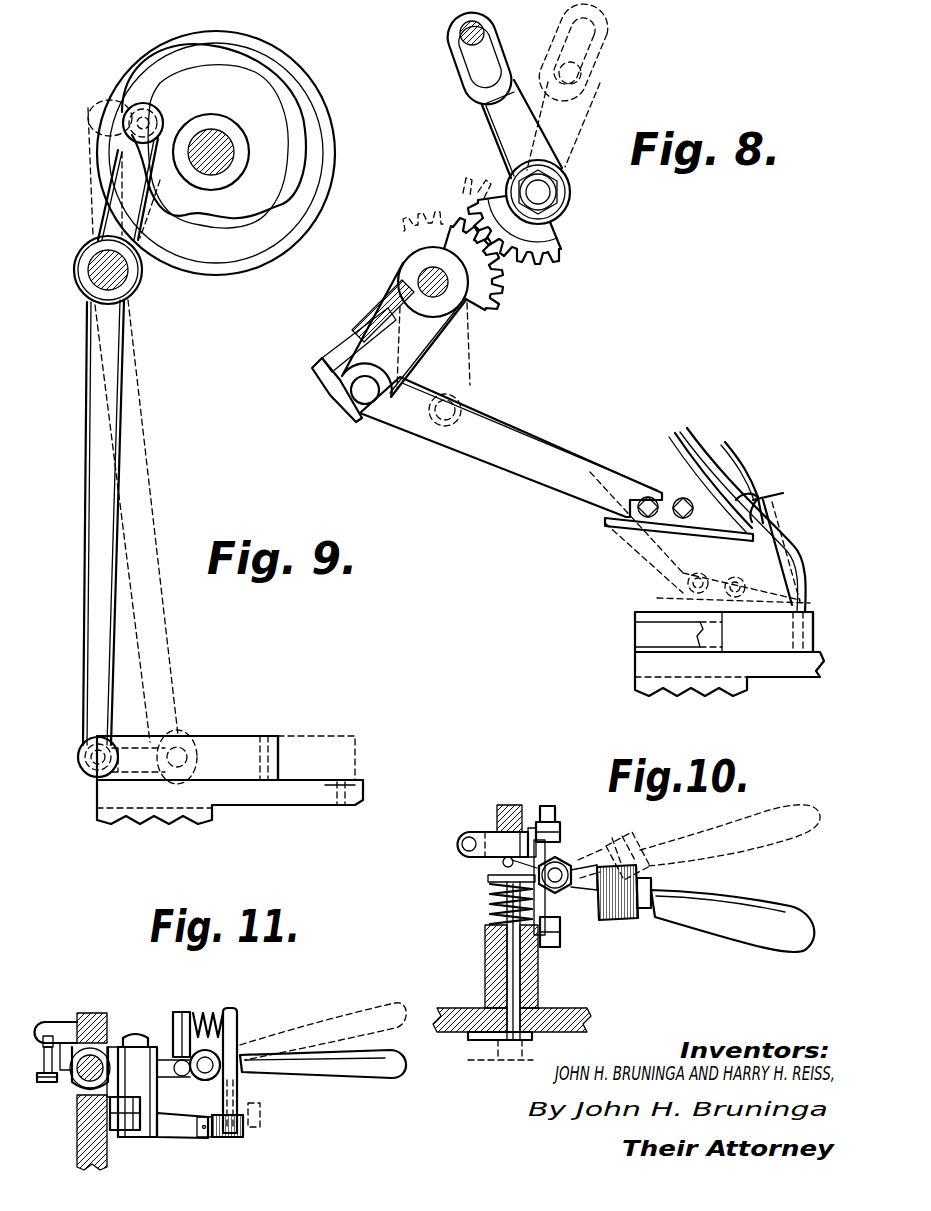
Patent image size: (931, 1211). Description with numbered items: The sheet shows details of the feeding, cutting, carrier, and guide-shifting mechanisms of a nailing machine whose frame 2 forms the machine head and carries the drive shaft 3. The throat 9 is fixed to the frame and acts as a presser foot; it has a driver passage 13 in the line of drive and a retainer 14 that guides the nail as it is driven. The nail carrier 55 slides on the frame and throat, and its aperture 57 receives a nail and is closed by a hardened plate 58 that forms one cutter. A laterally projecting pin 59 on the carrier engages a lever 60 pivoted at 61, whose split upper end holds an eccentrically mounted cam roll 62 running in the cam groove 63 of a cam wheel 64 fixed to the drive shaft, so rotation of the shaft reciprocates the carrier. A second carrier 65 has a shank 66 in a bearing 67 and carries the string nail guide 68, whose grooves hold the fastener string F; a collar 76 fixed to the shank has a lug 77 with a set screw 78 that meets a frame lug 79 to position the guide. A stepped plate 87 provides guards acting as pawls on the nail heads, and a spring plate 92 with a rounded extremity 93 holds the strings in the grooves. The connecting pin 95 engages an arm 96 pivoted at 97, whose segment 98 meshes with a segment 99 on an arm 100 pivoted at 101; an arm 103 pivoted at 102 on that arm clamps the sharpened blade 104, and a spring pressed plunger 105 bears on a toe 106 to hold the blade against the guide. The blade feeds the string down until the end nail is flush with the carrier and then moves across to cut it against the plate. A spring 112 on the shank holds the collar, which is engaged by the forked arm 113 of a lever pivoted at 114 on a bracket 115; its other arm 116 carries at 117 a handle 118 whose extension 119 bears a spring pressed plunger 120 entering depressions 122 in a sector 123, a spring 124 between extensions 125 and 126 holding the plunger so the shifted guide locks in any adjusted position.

In FIG. 10, the frame 2 is at (585, 1030).
In FIG. 11, the frame 2 is at (82, 1160).
In FIG. 9, the drive shaft 3 is at (224, 162).
In FIG. 9, the throat 9 is at (366, 795).
In FIG. 8, the throat 9 is at (797, 672).
In FIG. 9, the driver passage 13 is at (347, 786).
In FIG. 9, the retainer 14 is at (323, 789).
In FIG. 9, the nail carrier 55 is at (228, 740).
In FIG. 8, the nail carrier 55 is at (780, 612).
In FIG. 9, the aperture 57 is at (268, 752).
In FIG. 8, the aperture 57 is at (792, 632).
In FIG. 9, the hardened plate 58 is at (282, 758).
In FIG. 8, the hardened plate 58 is at (808, 610).
In FIG. 9, the laterally projecting pin 59 is at (92, 760).
In FIG. 9, the lever 60 is at (87, 531).
In FIG. 9, the pivot 61 is at (90, 268).
In FIG. 9, the cam roll 62 is at (163, 113).
In FIG. 9, the cam groove 63 is at (303, 136).
In FIG. 9, the cam wheel 64 is at (282, 52).
In FIG. 10, the carrier 65 is at (480, 1040).
In FIG. 10, the shank 66 is at (540, 985).
In FIG. 11, the shank 66 is at (120, 1047).
In FIG. 10, the bearing 67 is at (507, 982).
In FIG. 8, the string nail guide 68 is at (785, 510).
In FIG. 10, the collar 76 is at (540, 828).
In FIG. 11, the collar 76 is at (80, 1080).
In FIG. 10, the lug 77 is at (462, 832).
In FIG. 11, the lug 77 is at (62, 1047).
In FIG. 10, the set screw 78 is at (461, 843).
In FIG. 11, the set screw 78 is at (46, 1084).
In FIG. 11, the lug 79 is at (58, 1022).
In FIG. 8, the plate 87 is at (683, 462).
In FIG. 8, the spring plate 92 is at (700, 448).
In FIG. 8, the rounded extremity 93 is at (755, 527).
In FIG. 8, the connecting pin 95 is at (465, 23).
In FIG. 8, the arm 96 is at (500, 50).
In FIG. 8, the pivot 97 is at (546, 192).
In FIG. 8, the segment 98 is at (566, 237).
In FIG. 8, the segment 99 is at (512, 308).
In FIG. 8, the arm 100 is at (440, 340).
In FIG. 8, the pivot 101 is at (418, 274).
In FIG. 8, the pivot 102 is at (368, 406).
In FIG. 8, the arm 103 is at (525, 440).
In FIG. 8, the sharpened blade 104 is at (740, 535).
In FIG. 8, the spring pressed plunger 105 is at (342, 358).
In FIG. 8, the toe 106 is at (326, 388).
In FIG. 10, the spring 112 is at (490, 905).
In FIG. 10, the forked arm 113 is at (500, 865).
In FIG. 11, the forked arm 113 is at (95, 1048).
In FIG. 10, the pivot 114 is at (568, 865).
In FIG. 11, the pivot 114 is at (134, 1034).
In FIG. 10, the bracket 115 is at (560, 935).
In FIG. 11, the bracket 115 is at (118, 1131).
In FIG. 10, the arm 116 is at (622, 843).
In FIG. 11, the arm 116 is at (170, 1074).
In FIG. 10, the pivot 117 is at (642, 880).
In FIG. 11, the pivot 117 is at (237, 1050).
In FIG. 10, the handle 118 is at (737, 913).
In FIG. 11, the handle 118 is at (378, 1070).
In FIG. 11, the extension 119 is at (240, 1096).
In FIG. 11, the spring pressed plunger 120 is at (242, 1138).
In FIG. 11, the depressions 122 is at (206, 1138).
In FIG. 11, the sector 123 is at (185, 1140).
In FIG. 10, the spring 124 is at (620, 920).
In FIG. 11, the spring 124 is at (208, 1012).
In FIG. 10, the extension 125 is at (650, 908).
In FIG. 11, the extension 125 is at (238, 1012).
In FIG. 10, the extension 126 is at (570, 898).
In FIG. 11, the extension 126 is at (181, 1012).
In FIG. 8, the fastener string F is at (738, 448).